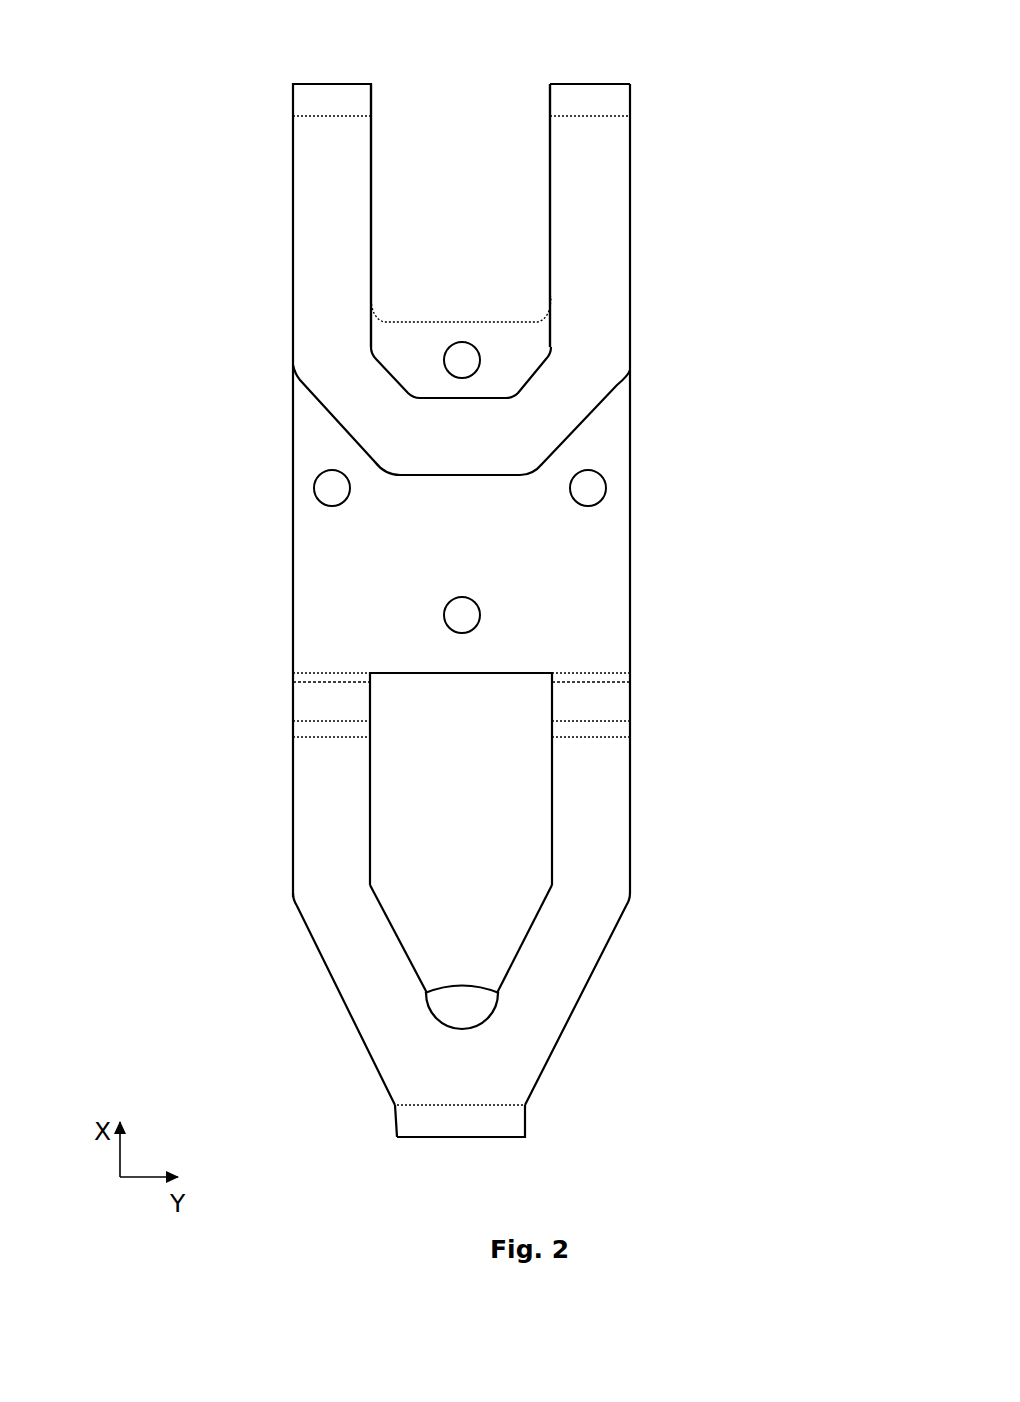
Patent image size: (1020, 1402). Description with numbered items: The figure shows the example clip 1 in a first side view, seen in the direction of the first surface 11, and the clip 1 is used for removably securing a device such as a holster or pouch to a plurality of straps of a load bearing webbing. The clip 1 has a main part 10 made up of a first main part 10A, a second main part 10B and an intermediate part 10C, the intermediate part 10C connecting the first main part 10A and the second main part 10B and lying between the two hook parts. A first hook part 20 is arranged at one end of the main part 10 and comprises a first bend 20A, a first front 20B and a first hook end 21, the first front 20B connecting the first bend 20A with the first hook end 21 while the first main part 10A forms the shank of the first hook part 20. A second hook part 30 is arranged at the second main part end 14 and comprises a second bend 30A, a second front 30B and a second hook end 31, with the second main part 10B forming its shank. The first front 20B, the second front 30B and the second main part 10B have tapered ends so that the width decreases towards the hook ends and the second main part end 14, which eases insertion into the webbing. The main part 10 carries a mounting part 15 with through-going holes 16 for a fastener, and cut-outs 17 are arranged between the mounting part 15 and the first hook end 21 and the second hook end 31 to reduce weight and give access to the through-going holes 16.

The clip 1 is at (732, 82).
The main part 10 is at (244, 572).
The first main part 10A is at (630, 388).
The second main part 10B is at (608, 912).
The intermediate part 10C is at (302, 710).
The first surface 11 is at (598, 550).
The second main part end 14 is at (473, 1103).
The mounting part 15 is at (461, 565).
The through-going holes 16 is at (440, 617).
The cut-outs 17 is at (477, 185).
The first hook part 20 is at (293, 262).
The first bend 20A is at (593, 97).
The first front 20B is at (605, 270).
The first hook end 21 is at (440, 475).
The second hook part 30 is at (525, 1123).
The second bend 30A is at (408, 1117).
The second front 30B is at (448, 1008).
The second hook end 31 is at (468, 988).